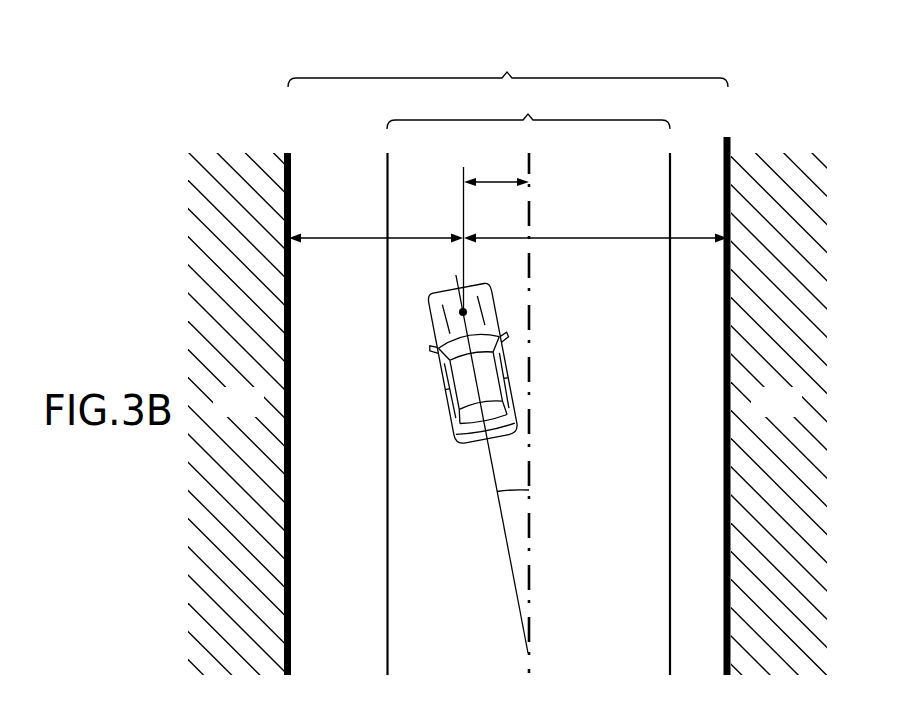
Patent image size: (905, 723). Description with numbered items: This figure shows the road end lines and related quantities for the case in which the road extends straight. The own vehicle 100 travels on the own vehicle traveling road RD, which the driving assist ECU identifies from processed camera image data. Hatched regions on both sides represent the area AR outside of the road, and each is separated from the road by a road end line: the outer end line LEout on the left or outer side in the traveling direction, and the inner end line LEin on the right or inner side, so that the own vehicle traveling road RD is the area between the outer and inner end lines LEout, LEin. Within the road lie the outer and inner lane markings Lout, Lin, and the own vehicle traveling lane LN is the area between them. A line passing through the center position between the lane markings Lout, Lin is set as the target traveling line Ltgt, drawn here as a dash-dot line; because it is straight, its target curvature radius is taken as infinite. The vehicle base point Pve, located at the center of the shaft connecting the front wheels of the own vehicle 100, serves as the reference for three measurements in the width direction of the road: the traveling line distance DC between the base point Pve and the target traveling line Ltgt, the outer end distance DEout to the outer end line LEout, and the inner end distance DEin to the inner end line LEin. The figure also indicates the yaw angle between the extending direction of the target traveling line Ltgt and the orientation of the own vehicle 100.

The own vehicle 100 is at (458, 438).
The vehicle base point Pve is at (459, 307).
The target traveling line Ltgt is at (531, 281).
The outer lane marking Lout is at (387, 322).
The inner lane marking Lin is at (668, 352).
The outer end line LEout is at (291, 365).
The inner end line LEin is at (726, 380).
The area outside of the own vehicle traveling road AR is at (452, 400).
The own vehicle traveling road RD is at (508, 65).
The own vehicle traveling lane LN is at (528, 108).
The traveling line distance DC is at (493, 178).
The outer end distance DEout is at (343, 233).
The inner end distance DEin is at (635, 234).